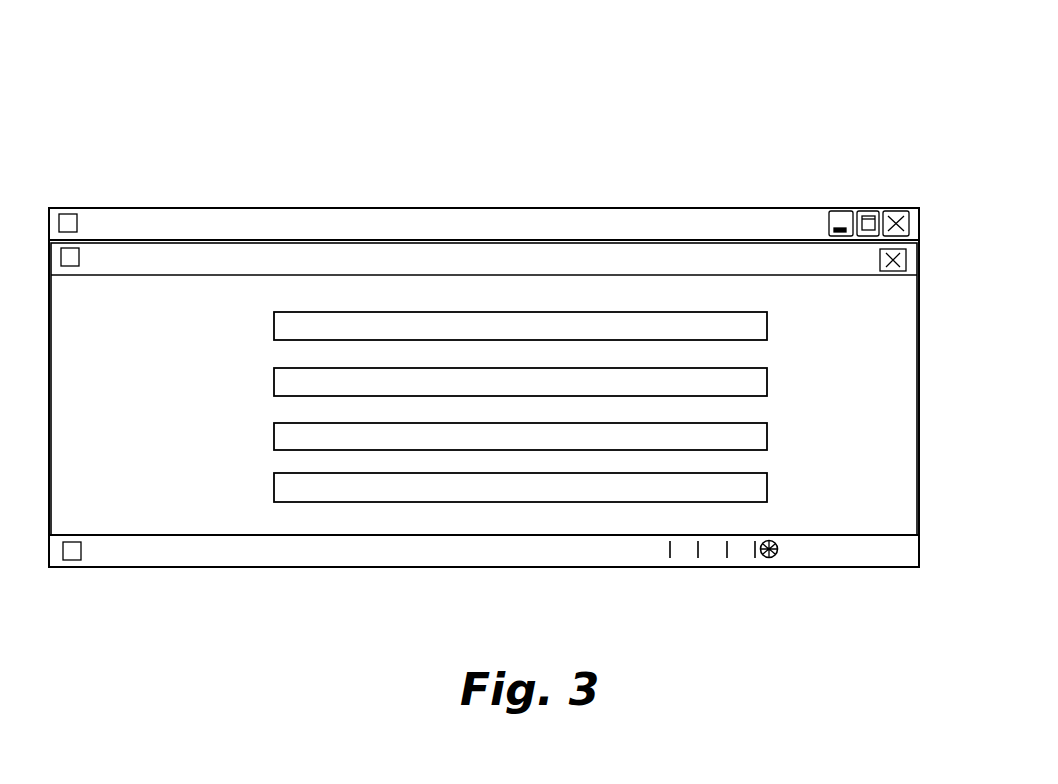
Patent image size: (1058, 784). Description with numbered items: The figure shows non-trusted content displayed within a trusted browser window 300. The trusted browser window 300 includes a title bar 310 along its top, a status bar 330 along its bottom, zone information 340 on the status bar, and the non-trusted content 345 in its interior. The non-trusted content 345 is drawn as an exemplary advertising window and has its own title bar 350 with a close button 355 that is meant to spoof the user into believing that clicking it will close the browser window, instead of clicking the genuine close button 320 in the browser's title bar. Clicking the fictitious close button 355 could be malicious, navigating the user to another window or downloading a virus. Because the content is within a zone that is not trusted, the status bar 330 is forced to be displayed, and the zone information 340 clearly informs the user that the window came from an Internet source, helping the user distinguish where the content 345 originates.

The trusted browser window 300 is at (818, 88).
The title bar 310 is at (310, 208).
The close button 320 is at (893, 208).
The status bar 330 is at (253, 556).
The zone information 340 is at (824, 560).
The non-trusted content 345 is at (892, 432).
The title bar 350 is at (156, 272).
The close button 355 is at (890, 276).